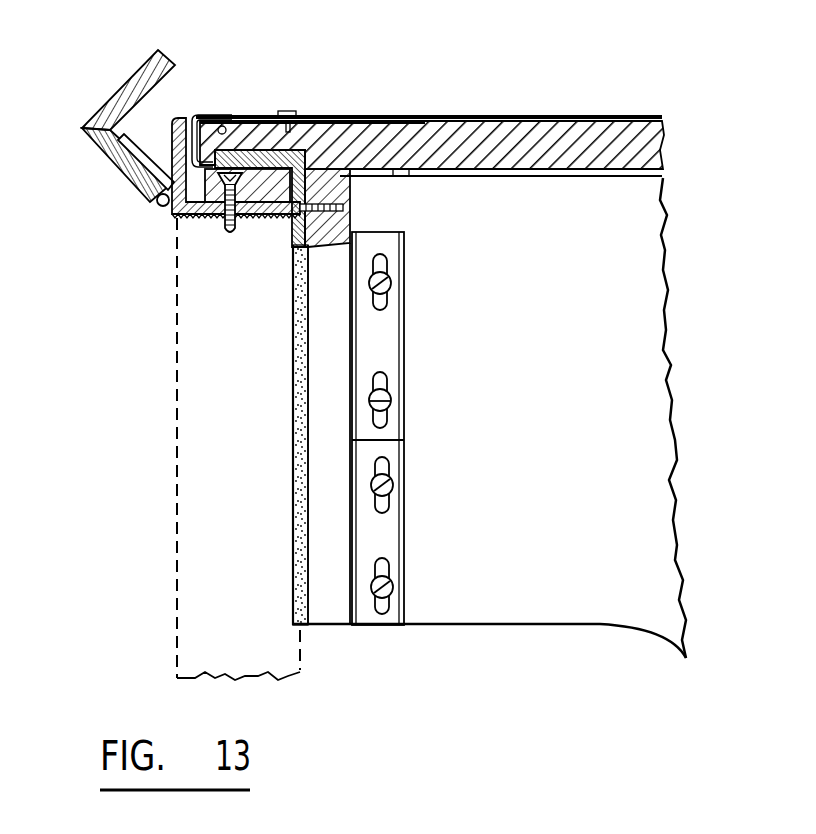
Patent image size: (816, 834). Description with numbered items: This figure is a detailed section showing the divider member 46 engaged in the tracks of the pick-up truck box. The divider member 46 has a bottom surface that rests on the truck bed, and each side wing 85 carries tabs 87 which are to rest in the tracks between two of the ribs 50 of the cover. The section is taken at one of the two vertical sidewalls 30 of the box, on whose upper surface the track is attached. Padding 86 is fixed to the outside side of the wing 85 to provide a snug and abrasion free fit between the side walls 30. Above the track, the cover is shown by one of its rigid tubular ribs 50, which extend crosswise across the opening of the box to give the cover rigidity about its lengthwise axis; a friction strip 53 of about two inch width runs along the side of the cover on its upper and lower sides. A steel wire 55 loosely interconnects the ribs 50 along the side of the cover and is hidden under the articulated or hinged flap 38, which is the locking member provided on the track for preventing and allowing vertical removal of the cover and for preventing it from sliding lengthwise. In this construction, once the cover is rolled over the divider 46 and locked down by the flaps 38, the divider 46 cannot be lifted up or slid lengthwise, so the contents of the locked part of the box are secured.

The locking member 38 is at (107, 110).
The steel wire 55 is at (236, 117).
The tab 87 is at (303, 140).
The friction strip 53 is at (386, 117).
The rigid tubular rib 50 is at (530, 117).
The vertical sidewall 30 is at (247, 427).
The divider member 46 is at (544, 426).
The padding 86 is at (310, 625).
The side wing 85 is at (337, 610).